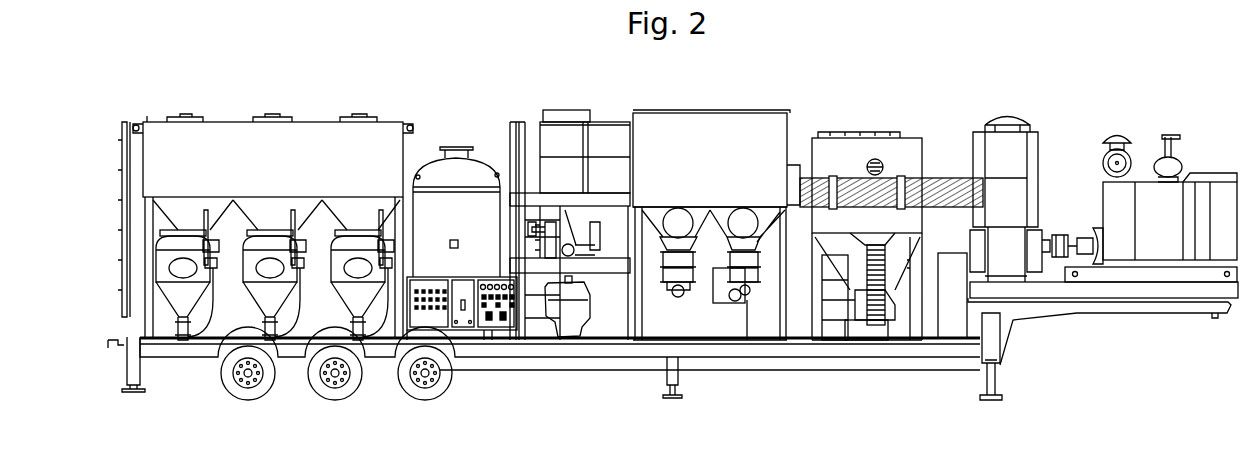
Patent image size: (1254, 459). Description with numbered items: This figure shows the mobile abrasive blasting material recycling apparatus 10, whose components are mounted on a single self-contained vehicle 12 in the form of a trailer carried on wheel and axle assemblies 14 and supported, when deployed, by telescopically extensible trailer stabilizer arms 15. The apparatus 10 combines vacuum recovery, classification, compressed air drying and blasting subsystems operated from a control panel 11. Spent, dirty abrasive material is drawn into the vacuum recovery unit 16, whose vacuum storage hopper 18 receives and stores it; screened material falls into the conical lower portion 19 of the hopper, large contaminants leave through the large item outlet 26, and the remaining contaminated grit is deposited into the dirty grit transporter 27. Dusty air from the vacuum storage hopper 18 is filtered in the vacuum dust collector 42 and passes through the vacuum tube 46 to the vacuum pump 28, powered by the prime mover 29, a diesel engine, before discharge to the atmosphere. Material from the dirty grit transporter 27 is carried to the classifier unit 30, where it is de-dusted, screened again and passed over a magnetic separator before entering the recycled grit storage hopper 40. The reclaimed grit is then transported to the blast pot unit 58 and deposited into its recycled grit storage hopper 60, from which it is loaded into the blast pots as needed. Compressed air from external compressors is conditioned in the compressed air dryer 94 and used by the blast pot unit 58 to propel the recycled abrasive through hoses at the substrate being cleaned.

The apparatus 10 is at (1057, 118).
The control panel 11 is at (488, 320).
The vehicle 12 is at (1040, 324).
The wheels and axle assemblies 14 is at (262, 388).
The telescopically extensible trailer stabilizer arms 15 is at (996, 383).
The vacuum recovery unit 16 is at (891, 214).
The vacuum storage hopper 18 is at (847, 150).
The conical lower portion 19 is at (848, 265).
The large item outlet 26 is at (882, 297).
The dirty grit transporter 27 is at (868, 330).
The vacuum pump 28 is at (1013, 203).
The prime mover 29 is at (1222, 195).
The classifier unit 30 is at (567, 105).
The recycled grit storage hopper 40 is at (584, 320).
The vacuum dust collector 42 is at (710, 108).
The vacuum tube 46 is at (953, 180).
The blast pot unit 58 is at (228, 118).
The recycled grit storage hopper 60 is at (261, 170).
The compressed air dryer 94 is at (478, 170).